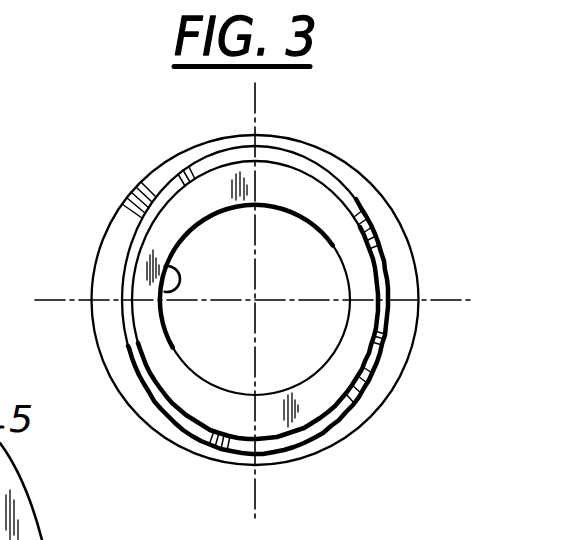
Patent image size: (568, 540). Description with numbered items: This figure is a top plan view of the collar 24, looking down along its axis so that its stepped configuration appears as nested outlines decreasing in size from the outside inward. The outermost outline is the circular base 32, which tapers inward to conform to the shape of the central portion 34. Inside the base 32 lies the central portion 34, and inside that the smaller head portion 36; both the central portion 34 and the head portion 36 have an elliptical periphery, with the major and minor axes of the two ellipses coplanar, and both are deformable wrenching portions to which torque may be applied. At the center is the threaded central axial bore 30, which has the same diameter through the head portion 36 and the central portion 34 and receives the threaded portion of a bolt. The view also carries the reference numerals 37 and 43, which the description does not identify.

The collar 24 is at (92, 168).
The central axial bore 30 is at (160, 290).
The circular base 32 is at (393, 360).
The central portion 34 is at (385, 275).
The head portion 36 is at (333, 407).
The inner bore surface 37 is at (343, 232).
The housing wall 43 is at (0, 474).